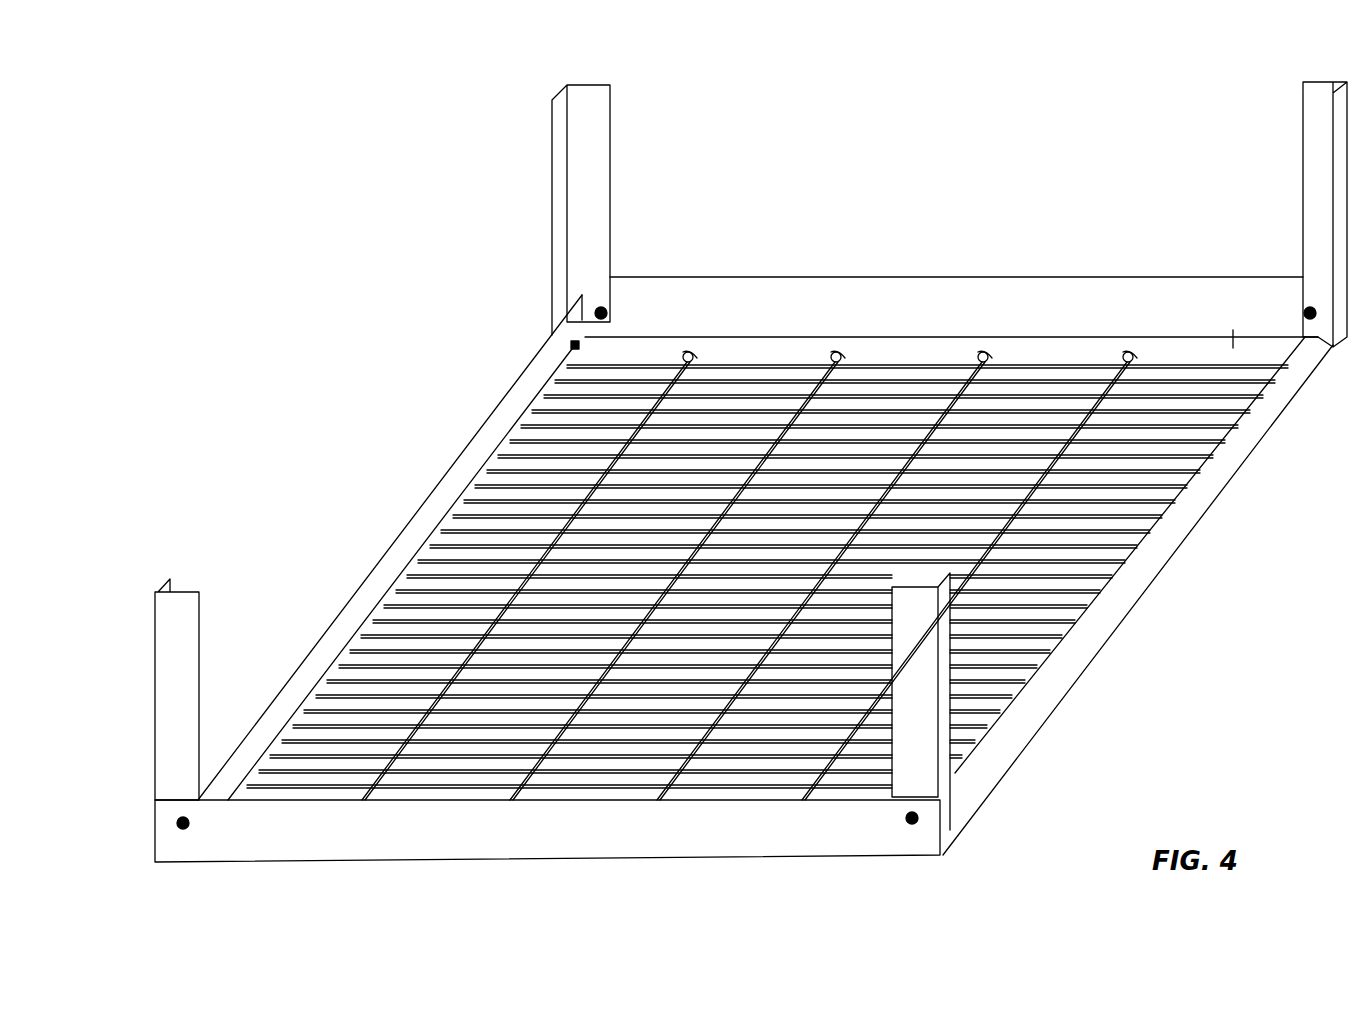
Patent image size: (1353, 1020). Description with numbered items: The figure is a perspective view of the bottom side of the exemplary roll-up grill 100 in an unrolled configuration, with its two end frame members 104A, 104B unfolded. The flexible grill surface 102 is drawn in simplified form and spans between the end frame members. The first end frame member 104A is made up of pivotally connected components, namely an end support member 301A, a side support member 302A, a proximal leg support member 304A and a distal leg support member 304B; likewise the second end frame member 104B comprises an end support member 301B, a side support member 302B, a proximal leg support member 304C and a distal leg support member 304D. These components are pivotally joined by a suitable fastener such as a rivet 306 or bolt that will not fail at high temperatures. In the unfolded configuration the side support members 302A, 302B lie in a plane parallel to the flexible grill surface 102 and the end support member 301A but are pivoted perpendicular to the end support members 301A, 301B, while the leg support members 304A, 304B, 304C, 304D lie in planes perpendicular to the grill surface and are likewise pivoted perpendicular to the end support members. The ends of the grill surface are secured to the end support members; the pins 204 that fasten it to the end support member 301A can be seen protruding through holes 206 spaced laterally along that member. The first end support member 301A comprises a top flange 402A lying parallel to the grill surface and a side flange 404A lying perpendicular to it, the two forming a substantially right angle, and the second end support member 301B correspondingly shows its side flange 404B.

The roll-up grill 100 is at (370, 396).
The flexible grill surface 102 is at (1098, 493).
The first end frame member 104A is at (530, 407).
The second end frame member 104B is at (199, 742).
The pins 204 is at (685, 355).
The holes 206 is at (827, 352).
The end support member 301A is at (820, 275).
The end support member 301B is at (390, 866).
The side support member 302A is at (388, 530).
The side support member 302B is at (1135, 560).
The proximal leg support member 304A is at (1318, 215).
The distal leg support member 304B is at (555, 172).
The proximal leg support member 304C is at (922, 618).
The distal leg support member 304D is at (154, 630).
The rivet 306 is at (590, 322).
The top flange 402A is at (1240, 350).
The side flange 404A is at (862, 297).
The side flange 404B is at (528, 845).